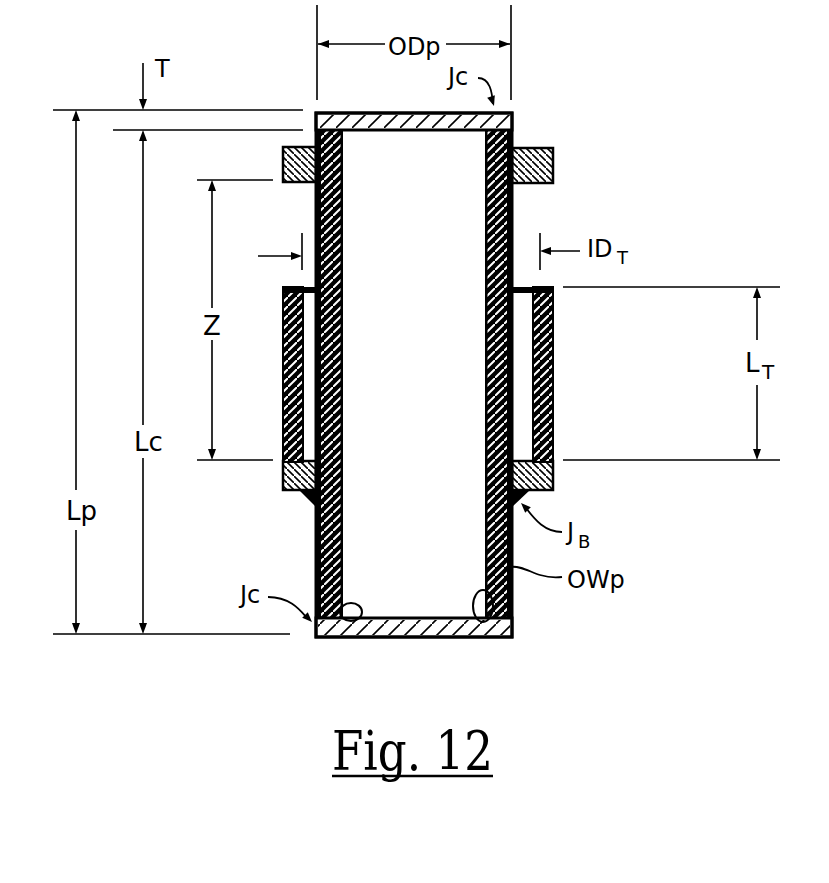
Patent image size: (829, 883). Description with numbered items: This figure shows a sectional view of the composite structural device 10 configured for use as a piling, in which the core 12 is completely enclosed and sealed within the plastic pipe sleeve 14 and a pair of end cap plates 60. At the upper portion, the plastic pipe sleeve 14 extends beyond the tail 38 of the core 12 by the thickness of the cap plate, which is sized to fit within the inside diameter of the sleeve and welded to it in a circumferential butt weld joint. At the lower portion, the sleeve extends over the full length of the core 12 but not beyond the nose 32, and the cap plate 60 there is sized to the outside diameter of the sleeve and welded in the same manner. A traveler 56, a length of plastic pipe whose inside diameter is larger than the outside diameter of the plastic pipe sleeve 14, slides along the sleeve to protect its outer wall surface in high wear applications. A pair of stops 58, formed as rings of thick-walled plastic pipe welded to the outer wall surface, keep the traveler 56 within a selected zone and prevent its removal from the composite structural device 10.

The composite structural device 10 is at (612, 65).
The core 12 is at (477, 638).
The plastic pipe sleeve 14 is at (510, 597).
The nose 32 is at (358, 637).
The tail 38 is at (340, 143).
The traveler 56 is at (553, 393).
The stop 58 is at (553, 158).
The end cap plates 60 is at (432, 117).